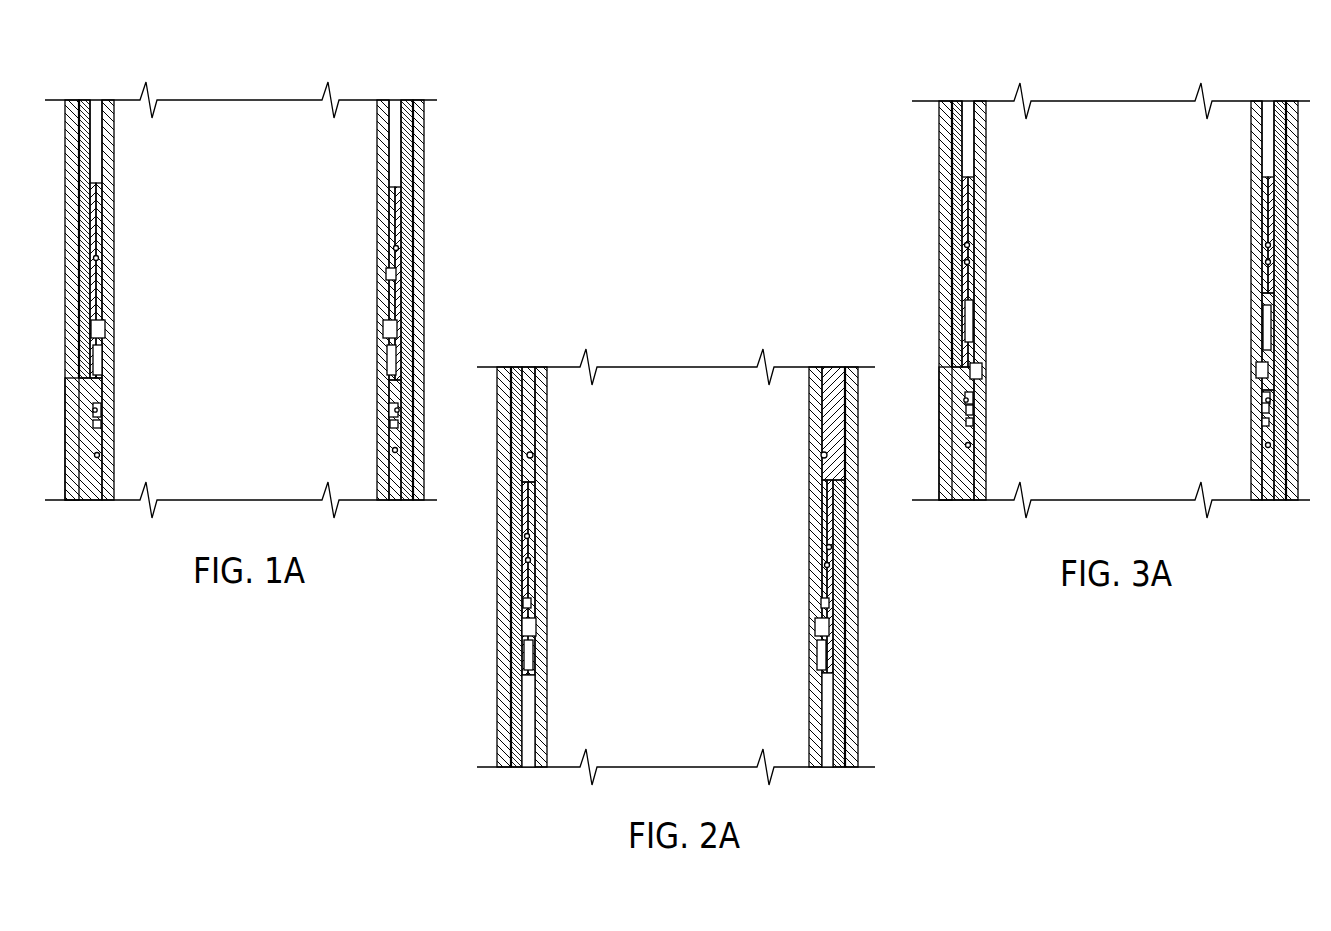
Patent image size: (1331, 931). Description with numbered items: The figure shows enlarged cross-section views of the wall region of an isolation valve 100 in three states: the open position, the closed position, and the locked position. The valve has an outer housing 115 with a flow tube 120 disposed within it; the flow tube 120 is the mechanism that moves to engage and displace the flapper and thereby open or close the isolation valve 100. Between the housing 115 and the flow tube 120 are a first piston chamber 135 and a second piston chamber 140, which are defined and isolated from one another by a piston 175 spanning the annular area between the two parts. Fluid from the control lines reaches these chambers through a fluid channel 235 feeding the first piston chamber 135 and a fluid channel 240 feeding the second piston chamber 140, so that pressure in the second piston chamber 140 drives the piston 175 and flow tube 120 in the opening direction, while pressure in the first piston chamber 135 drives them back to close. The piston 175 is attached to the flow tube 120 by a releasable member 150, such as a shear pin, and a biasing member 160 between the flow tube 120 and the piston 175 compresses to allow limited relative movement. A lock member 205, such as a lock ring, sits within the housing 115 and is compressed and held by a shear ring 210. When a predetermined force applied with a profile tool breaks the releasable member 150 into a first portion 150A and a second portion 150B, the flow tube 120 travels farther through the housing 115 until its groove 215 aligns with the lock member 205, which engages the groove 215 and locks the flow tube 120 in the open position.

In FIG. 2A, the isolation valve 100 is at (677, 165).
In FIG. 1A, the outer housing 115 is at (424, 392).
In FIG. 2A, the outer housing 115 is at (524, 385).
In FIG. 3A, the outer housing 115 is at (945, 343).
In FIG. 1A, the flow tube 120 is at (381, 126).
In FIG. 2A, the flow tube 120 is at (533, 694).
In FIG. 3A, the flow tube 120 is at (981, 167).
In FIG. 2A, the first piston chamber 135 is at (530, 745).
In FIG. 1A, the second piston chamber 140 is at (395, 142).
In FIG. 2A, the second piston chamber 140 is at (678, 567).
In FIG. 3A, the second piston chamber 140 is at (963, 130).
In FIG. 1A, the releasable member 150 is at (384, 328).
In FIG. 2A, the releasable member 150 is at (815, 630).
In FIG. 3A, the first portion 150A is at (1262, 362).
In FIG. 3A, the second portion 150B is at (1262, 322).
In FIG. 1A, the biasing member 160 is at (390, 278).
In FIG. 2A, the biasing member 160 is at (828, 603).
In FIG. 1A, the piston 175 is at (401, 212).
In FIG. 2A, the piston 175 is at (833, 578).
In FIG. 3A, the piston 175 is at (1262, 185).
In FIG. 1A, the lock member 205 is at (388, 427).
In FIG. 3A, the lock member 205 is at (1262, 420).
In FIG. 1A, the shear ring 210 is at (388, 410).
In FIG. 3A, the shear ring 210 is at (1262, 397).
In FIG. 1A, the groove 215 is at (386, 372).
In FIG. 2A, the groove 215 is at (818, 652).
In FIG. 3A, the groove 215 is at (1262, 403).
In FIG. 1A, the fluid channel 235 is at (73, 133).
In FIG. 2A, the fluid channel 235 is at (506, 580).
In FIG. 3A, the fluid channel 235 is at (938, 262).
In FIG. 2A, the fluid channel 240 is at (843, 438).